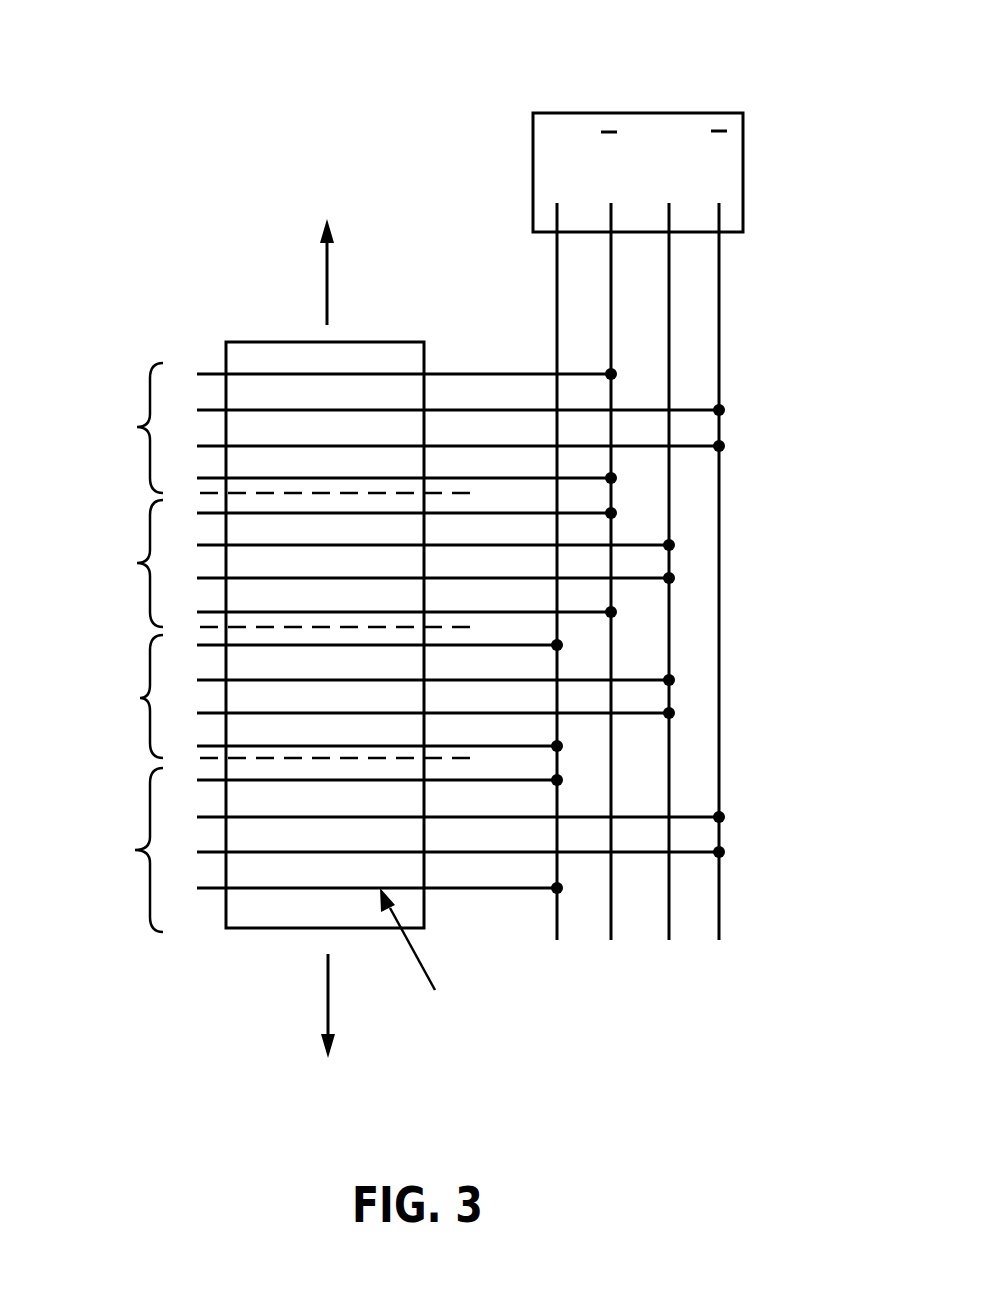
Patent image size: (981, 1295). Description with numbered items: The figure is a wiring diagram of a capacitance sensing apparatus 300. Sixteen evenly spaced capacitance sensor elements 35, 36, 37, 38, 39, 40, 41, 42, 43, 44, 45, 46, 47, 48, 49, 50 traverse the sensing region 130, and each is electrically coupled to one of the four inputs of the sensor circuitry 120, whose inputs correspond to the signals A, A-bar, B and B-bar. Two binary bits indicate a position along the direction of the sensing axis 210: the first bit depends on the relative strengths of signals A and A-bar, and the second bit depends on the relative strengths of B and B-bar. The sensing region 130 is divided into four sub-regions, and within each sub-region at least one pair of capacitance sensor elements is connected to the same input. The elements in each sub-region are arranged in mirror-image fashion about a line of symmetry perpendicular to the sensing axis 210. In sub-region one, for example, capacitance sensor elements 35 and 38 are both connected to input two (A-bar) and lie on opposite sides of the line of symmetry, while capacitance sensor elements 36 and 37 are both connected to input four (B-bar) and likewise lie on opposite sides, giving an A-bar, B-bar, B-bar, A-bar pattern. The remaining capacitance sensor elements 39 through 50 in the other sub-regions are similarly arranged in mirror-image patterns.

The capacitance sensing apparatus 300 is at (163, 49).
The sensor circuitry 120 is at (702, 98).
The sensing region 130 is at (364, 322).
The sensing axis 210 is at (272, 1063).
The capacitance sensor element 35 is at (390, 374).
The capacitance sensor element 36 is at (444, 410).
The capacitance sensor element 37 is at (444, 446).
The capacitance sensor element 38 is at (390, 478).
The capacitance sensor element 39 is at (390, 513).
The capacitance sensor element 40 is at (419, 545).
The capacitance sensor element 41 is at (419, 578).
The capacitance sensor element 42 is at (390, 612).
The capacitance sensor element 43 is at (363, 645).
The capacitance sensor element 44 is at (419, 680).
The capacitance sensor element 45 is at (419, 713).
The capacitance sensor element 46 is at (363, 746).
The capacitance sensor element 47 is at (363, 780).
The capacitance sensor element 48 is at (444, 817).
The capacitance sensor element 49 is at (444, 852).
The capacitance sensor element 50 is at (363, 888).